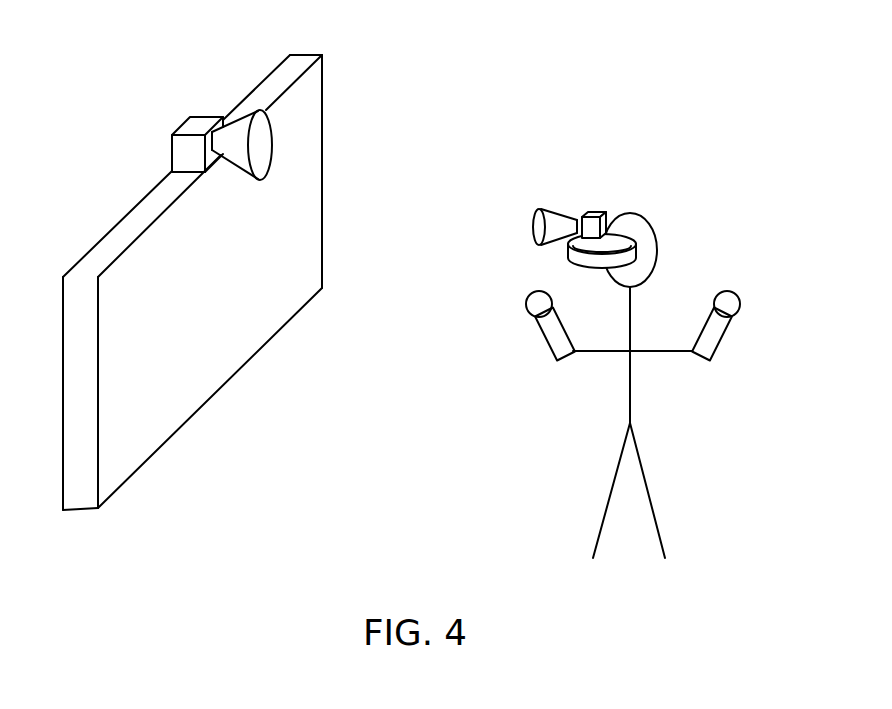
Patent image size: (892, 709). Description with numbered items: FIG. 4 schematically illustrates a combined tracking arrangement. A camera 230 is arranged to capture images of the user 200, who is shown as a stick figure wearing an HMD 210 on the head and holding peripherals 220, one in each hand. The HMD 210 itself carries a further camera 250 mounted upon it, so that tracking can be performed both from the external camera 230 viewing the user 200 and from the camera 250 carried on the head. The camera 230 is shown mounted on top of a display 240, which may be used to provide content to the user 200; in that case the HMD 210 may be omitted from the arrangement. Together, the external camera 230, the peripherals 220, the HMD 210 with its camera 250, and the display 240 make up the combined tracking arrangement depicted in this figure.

The user 200 is at (633, 387).
The HMD 210 is at (634, 256).
The peripherals 220 is at (540, 356).
The camera 230 is at (172, 133).
The display 240 is at (213, 397).
The camera 250 is at (589, 206).